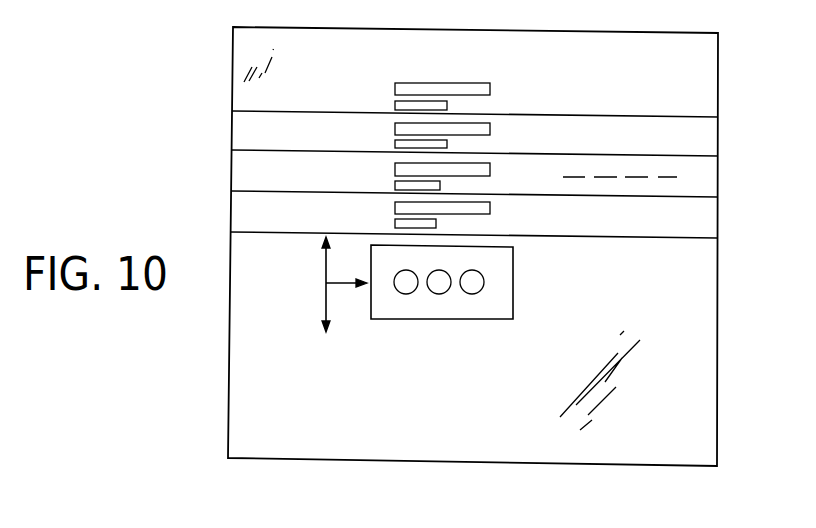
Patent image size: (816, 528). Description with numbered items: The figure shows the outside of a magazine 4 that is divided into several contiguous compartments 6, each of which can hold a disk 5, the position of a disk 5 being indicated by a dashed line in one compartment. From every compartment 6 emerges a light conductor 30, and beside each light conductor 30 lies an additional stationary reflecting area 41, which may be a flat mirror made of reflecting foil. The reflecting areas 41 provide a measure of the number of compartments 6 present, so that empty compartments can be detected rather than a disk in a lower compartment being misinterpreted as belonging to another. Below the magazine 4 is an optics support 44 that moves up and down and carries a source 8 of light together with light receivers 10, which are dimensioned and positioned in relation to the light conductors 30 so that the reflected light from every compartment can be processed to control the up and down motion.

The magazine 4 is at (245, 135).
The disk 5 is at (595, 176).
The compartments 6 is at (702, 135).
The source of light 8 is at (439, 290).
The light receiver 10 is at (477, 342).
The light conductors 30 is at (455, 83).
The reflecting areas 41 is at (400, 103).
The optics support 44 is at (500, 272).